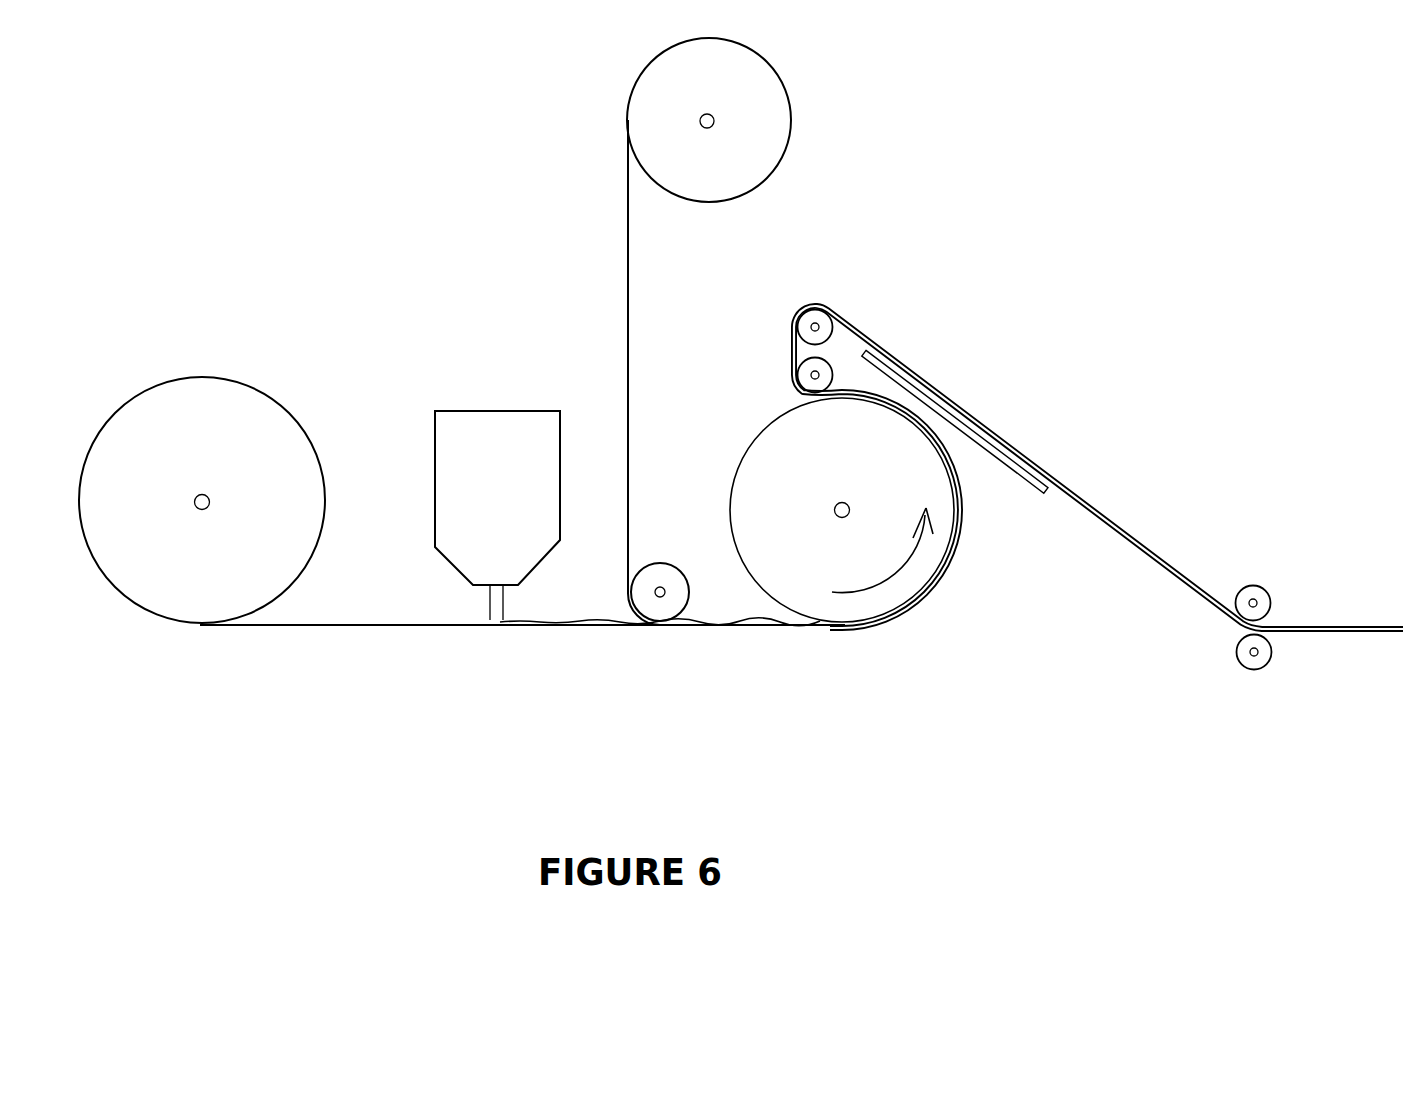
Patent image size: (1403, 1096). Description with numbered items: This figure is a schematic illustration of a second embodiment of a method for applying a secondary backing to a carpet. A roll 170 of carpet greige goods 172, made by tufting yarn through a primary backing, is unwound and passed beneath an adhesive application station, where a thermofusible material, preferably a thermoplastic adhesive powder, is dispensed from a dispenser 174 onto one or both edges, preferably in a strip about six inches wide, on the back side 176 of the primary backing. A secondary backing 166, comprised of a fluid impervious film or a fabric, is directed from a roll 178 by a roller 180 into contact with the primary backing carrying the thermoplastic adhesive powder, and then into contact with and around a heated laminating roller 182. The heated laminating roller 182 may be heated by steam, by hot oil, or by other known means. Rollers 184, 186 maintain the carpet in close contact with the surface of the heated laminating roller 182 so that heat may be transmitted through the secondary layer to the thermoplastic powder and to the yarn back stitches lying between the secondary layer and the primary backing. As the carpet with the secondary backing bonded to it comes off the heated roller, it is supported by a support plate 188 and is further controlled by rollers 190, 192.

The secondary backing 166 is at (629, 318).
The roll 170 is at (214, 368).
The carpet greige goods 172 is at (406, 630).
The dispenser 174 is at (517, 434).
The back side 176 is at (391, 623).
The roll 178 is at (758, 138).
The roller 180 is at (664, 573).
The heated laminating roller 182 is at (763, 458).
The roller 184 is at (828, 378).
The roller 186 is at (829, 333).
The support plate 188 is at (1027, 478).
The roller 190 is at (1261, 598).
The roller 192 is at (1266, 658).